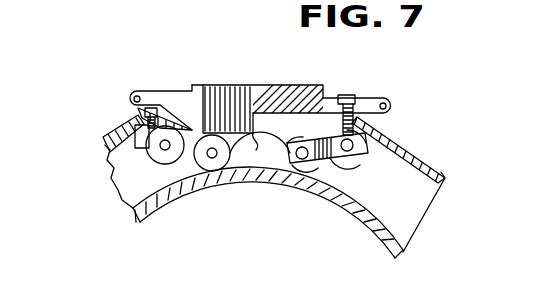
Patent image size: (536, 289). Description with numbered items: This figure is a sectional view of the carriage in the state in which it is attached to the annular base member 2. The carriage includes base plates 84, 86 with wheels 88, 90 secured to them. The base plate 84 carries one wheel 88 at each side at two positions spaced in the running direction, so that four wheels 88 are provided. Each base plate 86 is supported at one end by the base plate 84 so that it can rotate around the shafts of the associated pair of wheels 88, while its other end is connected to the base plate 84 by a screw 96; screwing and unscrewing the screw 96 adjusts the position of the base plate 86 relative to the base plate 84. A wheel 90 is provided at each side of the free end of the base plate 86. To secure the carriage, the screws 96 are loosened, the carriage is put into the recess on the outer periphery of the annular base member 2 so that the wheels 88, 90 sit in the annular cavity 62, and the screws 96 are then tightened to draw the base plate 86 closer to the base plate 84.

The annular base member 2 is at (478, 180).
The annular cavity 62 is at (412, 220).
The base plate 84 is at (288, 84).
The base plate 86 is at (110, 141).
The wheel 88 is at (211, 172).
The wheel 90 is at (157, 155).
The screw 96 is at (145, 113).